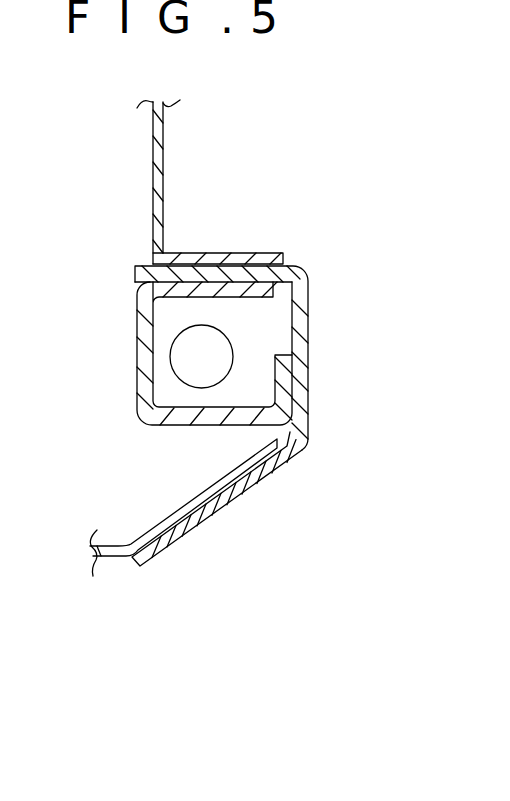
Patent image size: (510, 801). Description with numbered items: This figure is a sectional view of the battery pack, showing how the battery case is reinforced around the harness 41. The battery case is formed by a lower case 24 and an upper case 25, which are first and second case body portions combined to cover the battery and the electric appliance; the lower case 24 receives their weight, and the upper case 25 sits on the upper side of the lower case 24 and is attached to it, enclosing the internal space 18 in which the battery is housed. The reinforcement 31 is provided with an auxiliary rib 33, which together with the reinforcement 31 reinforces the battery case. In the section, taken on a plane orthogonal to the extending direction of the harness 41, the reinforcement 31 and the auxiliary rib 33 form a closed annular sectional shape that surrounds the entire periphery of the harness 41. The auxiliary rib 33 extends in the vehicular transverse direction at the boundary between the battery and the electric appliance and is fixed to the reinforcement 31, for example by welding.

The internal space 18 is at (127, 147).
The upper case 25 is at (164, 198).
The reinforcement 31 is at (308, 396).
The harness 41 is at (234, 357).
The auxiliary rib 33 is at (213, 426).
The lower case 24 is at (96, 560).